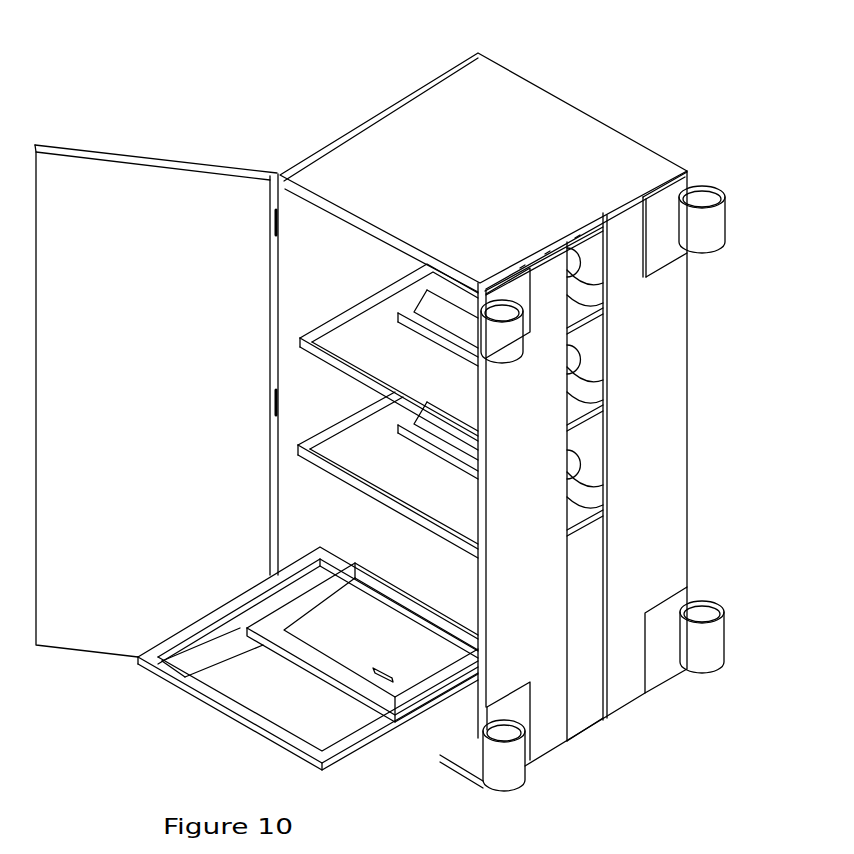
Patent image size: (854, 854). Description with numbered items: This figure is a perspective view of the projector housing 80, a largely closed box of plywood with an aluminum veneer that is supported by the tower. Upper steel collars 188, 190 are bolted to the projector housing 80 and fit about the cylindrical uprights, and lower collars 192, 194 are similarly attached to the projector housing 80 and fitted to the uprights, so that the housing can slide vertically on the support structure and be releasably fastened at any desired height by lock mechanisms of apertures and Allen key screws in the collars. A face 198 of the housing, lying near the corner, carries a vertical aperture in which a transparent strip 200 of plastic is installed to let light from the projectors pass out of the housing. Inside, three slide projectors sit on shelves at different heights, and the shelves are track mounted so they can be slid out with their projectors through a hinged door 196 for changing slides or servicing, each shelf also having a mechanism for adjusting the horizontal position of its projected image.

The projector housing 80 is at (541, 50).
The upper steel collar 188 is at (708, 238).
The upper steel collar 190 is at (510, 337).
The lower collar 192 is at (705, 645).
The lower collar 194 is at (513, 763).
The hinged door 196 is at (208, 163).
The face 198 is at (648, 345).
The transparent strip 200 is at (578, 232).